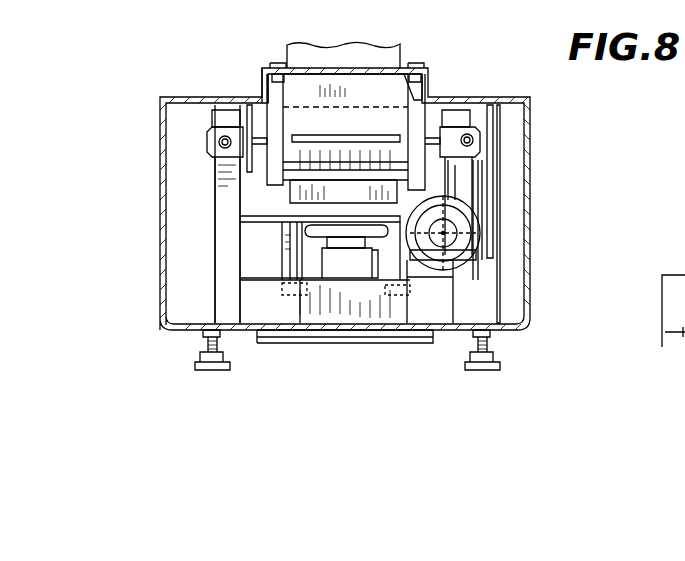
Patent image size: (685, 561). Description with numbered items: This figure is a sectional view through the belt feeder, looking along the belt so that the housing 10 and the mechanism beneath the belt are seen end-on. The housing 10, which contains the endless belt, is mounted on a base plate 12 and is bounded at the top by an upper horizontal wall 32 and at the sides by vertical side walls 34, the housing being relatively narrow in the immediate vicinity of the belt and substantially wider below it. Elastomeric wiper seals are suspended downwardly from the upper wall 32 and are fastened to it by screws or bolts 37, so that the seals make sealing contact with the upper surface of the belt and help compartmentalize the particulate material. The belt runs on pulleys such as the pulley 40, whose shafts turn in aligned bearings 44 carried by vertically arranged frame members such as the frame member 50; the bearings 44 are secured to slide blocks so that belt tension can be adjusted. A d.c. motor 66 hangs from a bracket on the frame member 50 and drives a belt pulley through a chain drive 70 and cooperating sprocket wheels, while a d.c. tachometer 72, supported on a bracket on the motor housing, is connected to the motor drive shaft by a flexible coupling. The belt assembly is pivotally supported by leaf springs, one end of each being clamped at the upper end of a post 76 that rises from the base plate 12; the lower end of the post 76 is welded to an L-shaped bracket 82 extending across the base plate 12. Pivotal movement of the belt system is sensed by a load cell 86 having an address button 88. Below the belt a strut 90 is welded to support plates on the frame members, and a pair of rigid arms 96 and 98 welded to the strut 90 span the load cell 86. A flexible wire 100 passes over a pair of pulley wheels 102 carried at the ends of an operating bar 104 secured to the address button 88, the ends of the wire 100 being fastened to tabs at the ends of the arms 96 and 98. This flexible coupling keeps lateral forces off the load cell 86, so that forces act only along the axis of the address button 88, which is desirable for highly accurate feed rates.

The housing 10 is at (158, 155).
The base plate 12 is at (236, 330).
The upper horizontal wall 32 is at (360, 46).
The vertical side wall 34 is at (262, 86).
The screw or bolt 37 is at (278, 62).
The pulley 40 is at (684, 362).
The bearing 44 is at (237, 118).
The frame member 50 is at (455, 168).
The d.c. motor 66 is at (476, 216).
The chain drive 70 is at (490, 188).
The d.c. tachometer 72 is at (450, 233).
The post 76 is at (218, 236).
The L-shaped bracket 82 is at (248, 296).
The load cell 86 is at (355, 270).
The address button 88 is at (398, 240).
The strut 90 is at (283, 224).
The rigid arm 96 is at (288, 268).
The rigid arm 98 is at (400, 262).
The flexible wire 100 is at (312, 278).
The pulley wheel 102 is at (295, 222).
The operating bar 104 is at (352, 232).